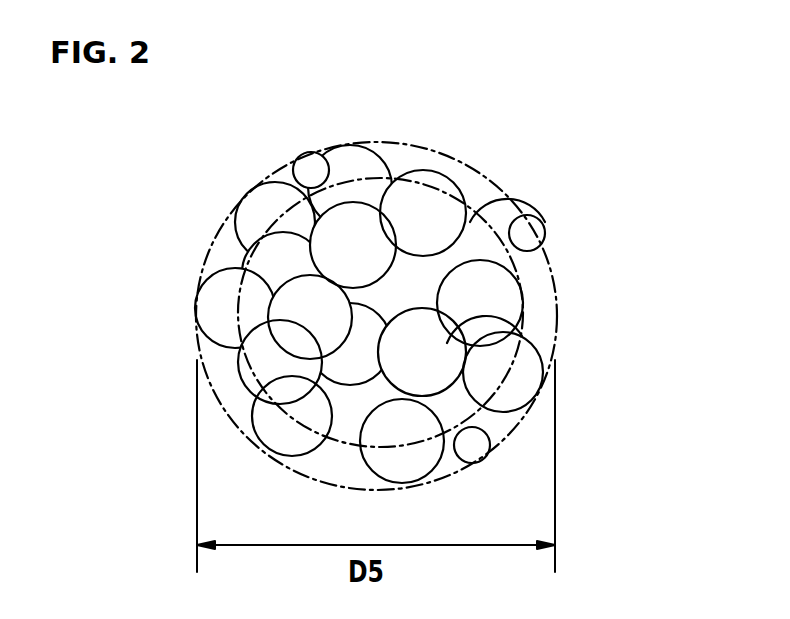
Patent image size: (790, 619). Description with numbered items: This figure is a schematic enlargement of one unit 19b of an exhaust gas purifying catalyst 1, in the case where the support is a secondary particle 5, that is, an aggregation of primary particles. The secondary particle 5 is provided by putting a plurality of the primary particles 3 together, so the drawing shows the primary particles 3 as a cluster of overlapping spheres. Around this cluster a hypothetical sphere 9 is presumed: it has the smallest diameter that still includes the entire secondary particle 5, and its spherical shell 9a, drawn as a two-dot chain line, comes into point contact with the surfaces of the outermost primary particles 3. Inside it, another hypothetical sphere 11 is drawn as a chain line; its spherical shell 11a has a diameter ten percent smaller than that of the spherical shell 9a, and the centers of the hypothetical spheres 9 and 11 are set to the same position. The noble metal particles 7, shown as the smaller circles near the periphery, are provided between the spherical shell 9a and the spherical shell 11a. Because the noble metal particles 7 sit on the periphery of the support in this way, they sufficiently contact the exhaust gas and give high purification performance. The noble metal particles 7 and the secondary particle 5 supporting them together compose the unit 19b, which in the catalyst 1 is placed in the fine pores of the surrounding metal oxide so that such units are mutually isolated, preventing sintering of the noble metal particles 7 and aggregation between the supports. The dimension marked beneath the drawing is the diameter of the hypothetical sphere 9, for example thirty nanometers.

The exhaust gas purifying catalyst 1 is at (444, 261).
The unit 19b is at (511, 134).
The primary particle 3 is at (445, 347).
The secondary particle 5 is at (398, 157).
The noble metal particle 7 is at (309, 163).
The hypothetical sphere 9 is at (444, 316).
The spherical shell 9a is at (552, 275).
The another hypothetical sphere 11 is at (583, 211).
The spherical shell 11a is at (522, 211).